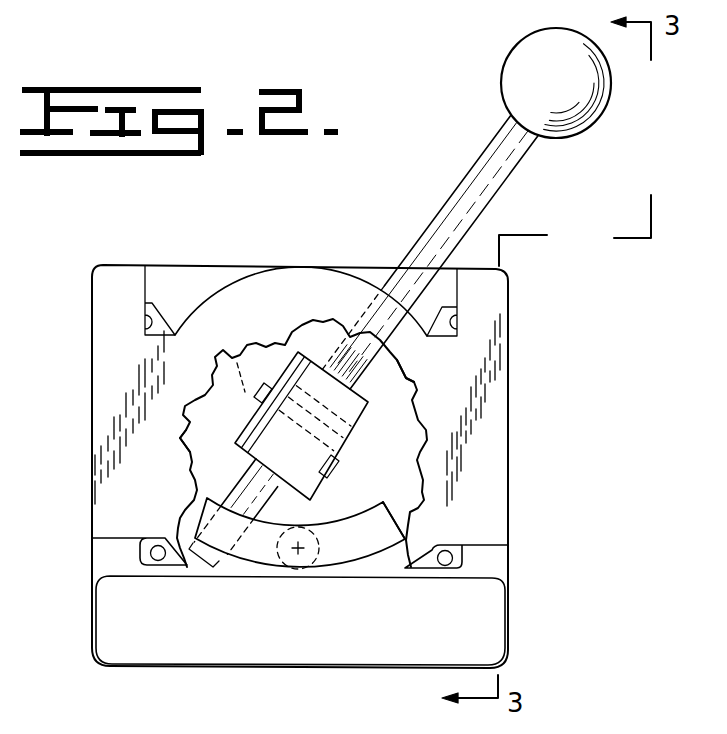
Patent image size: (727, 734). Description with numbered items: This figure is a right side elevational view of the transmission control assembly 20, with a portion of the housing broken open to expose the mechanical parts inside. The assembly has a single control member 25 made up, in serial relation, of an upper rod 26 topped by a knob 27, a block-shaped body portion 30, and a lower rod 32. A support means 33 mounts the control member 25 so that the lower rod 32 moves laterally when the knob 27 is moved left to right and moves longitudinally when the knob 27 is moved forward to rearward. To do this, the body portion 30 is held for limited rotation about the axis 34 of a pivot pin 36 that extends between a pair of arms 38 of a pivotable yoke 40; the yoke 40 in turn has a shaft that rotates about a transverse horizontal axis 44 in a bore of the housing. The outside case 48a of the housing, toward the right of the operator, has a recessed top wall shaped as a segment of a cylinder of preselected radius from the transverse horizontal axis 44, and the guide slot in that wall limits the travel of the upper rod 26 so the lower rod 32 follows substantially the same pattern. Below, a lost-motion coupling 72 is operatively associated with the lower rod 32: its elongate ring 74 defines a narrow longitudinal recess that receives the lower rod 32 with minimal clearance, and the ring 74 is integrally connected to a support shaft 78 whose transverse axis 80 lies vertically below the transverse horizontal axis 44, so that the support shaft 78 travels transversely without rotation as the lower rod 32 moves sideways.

The transmission control assembly 20 is at (507, 455).
The control member 25 is at (481, 167).
The upper rod 26 is at (442, 222).
The knob 27 is at (517, 57).
The body portion 30 is at (343, 322).
The lower rod 32 is at (243, 480).
The support means 33 is at (282, 372).
The axis 34 is at (240, 360).
The pivot pin 36 is at (243, 410).
The arms 38 is at (200, 432).
The yoke 40 is at (355, 433).
The transverse horizontal axis 44 is at (295, 435).
The outside case 48a is at (497, 300).
The lost-motion coupling 72 is at (246, 552).
The elongate ring 74 is at (370, 548).
The support shaft 78 is at (275, 580).
The transverse axis 80 is at (300, 549).